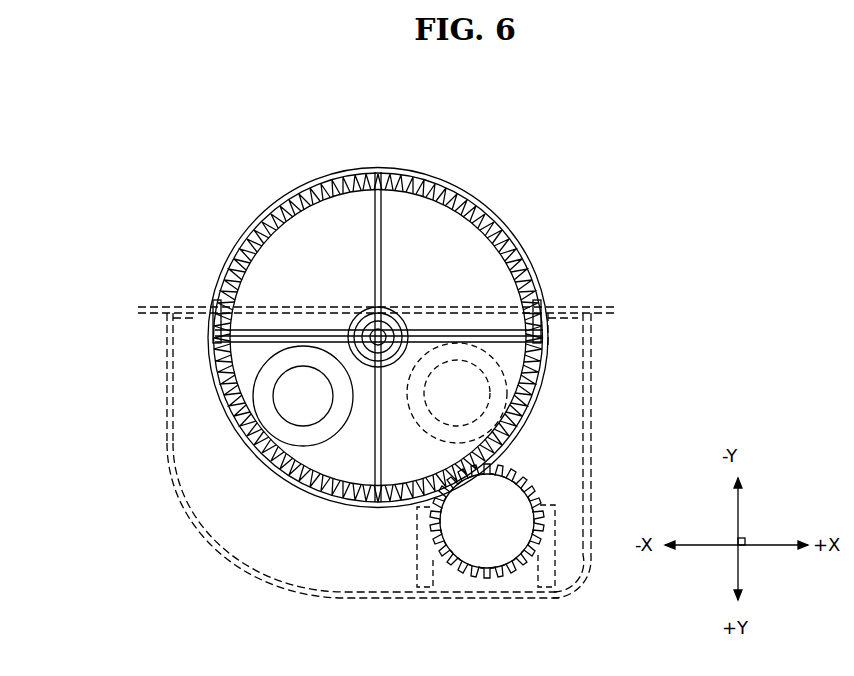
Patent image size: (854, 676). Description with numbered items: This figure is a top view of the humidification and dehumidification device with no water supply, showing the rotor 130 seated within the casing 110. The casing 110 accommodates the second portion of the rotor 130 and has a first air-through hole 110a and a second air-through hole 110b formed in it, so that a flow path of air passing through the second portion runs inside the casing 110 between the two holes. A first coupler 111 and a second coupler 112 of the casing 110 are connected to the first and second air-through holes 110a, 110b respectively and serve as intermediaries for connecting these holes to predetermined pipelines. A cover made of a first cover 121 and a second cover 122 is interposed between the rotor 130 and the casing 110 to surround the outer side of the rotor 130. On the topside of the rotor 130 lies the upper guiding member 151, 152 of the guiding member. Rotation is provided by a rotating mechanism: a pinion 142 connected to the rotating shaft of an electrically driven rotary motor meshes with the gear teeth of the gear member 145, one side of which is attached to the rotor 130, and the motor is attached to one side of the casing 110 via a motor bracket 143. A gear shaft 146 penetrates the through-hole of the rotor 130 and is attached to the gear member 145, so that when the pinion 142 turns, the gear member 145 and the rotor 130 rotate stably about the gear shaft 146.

The casing 110 is at (263, 555).
The first air-through hole 110a is at (295, 400).
The second air-through hole 110b is at (500, 418).
The first coupler 111 is at (258, 462).
The second coupler 112 is at (512, 372).
The first cover 121 is at (214, 385).
The second cover 122 is at (452, 178).
The rotor 130 is at (302, 252).
The pinion 142 is at (497, 540).
The motor bracket 143 is at (448, 593).
The gear member 145 is at (457, 403).
The gear shaft 146 is at (378, 337).
The upper guiding member 151 is at (548, 340).
The upper guiding member 152 is at (500, 332).